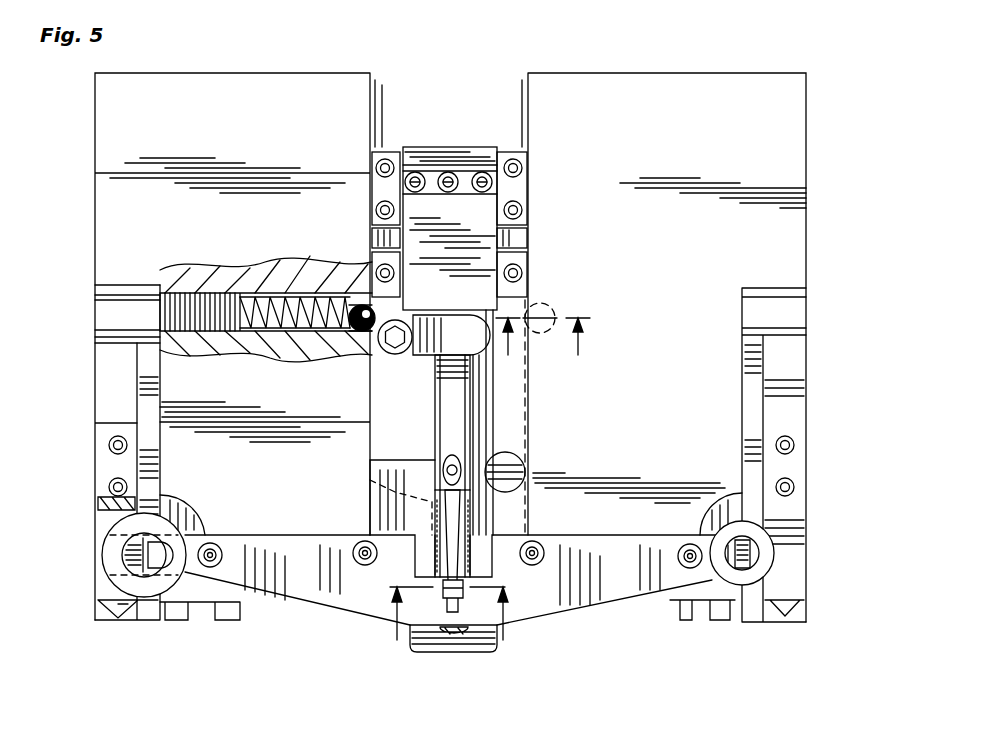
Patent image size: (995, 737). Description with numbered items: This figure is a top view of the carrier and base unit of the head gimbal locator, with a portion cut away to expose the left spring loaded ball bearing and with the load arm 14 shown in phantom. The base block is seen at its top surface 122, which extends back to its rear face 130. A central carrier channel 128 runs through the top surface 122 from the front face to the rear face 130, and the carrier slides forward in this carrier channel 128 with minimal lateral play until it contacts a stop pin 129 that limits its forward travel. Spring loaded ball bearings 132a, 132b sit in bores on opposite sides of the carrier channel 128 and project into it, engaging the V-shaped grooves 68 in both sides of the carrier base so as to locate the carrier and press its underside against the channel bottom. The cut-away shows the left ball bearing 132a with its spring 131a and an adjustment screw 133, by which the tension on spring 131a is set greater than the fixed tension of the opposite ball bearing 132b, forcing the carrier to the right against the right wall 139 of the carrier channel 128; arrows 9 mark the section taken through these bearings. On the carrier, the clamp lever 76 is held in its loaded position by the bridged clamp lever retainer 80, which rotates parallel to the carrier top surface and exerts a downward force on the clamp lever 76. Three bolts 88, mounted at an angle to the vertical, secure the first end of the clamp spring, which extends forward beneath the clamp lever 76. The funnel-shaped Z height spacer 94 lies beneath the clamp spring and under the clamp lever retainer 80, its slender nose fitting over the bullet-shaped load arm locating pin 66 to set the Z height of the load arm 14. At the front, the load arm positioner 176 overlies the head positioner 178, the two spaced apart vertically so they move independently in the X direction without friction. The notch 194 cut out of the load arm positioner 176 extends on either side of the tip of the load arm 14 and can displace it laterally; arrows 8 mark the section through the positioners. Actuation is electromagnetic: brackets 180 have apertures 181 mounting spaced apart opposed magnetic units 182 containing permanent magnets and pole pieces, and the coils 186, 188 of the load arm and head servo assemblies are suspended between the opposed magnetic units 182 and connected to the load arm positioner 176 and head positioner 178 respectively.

The rear face 130 is at (312, 73).
The top surface 122 is at (658, 92).
The right wall 139 is at (522, 95).
The bolts 88 is at (483, 172).
The clamp lever 76 is at (528, 196).
The clamp lever retainer 80 is at (475, 345).
The Z height spacer 94 is at (440, 405).
The V-shaped grooves 68 is at (365, 290).
The load arm locating pin 66 is at (445, 465).
The stop pin 129 is at (522, 465).
The load arm 14 is at (395, 492).
The carrier channel 128 is at (390, 515).
The adjustment screw 133 is at (172, 290).
The spring 131a is at (265, 290).
The spring loaded ball bearing 132a is at (348, 303).
The spring loaded ball bearing 132b is at (545, 305).
The section line 9 is at (543, 348).
The brackets 180 is at (105, 455).
The apertures 181 is at (105, 512).
The magnetic units 182 is at (105, 612).
The coil 188 is at (150, 597).
The coil 186 is at (745, 598).
The head positioner 178 is at (318, 595).
The load arm positioner 176 is at (555, 605).
The notch 194 is at (455, 630).
The section line 8 is at (449, 627).